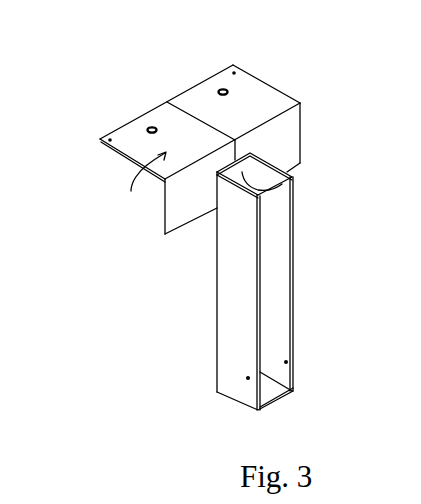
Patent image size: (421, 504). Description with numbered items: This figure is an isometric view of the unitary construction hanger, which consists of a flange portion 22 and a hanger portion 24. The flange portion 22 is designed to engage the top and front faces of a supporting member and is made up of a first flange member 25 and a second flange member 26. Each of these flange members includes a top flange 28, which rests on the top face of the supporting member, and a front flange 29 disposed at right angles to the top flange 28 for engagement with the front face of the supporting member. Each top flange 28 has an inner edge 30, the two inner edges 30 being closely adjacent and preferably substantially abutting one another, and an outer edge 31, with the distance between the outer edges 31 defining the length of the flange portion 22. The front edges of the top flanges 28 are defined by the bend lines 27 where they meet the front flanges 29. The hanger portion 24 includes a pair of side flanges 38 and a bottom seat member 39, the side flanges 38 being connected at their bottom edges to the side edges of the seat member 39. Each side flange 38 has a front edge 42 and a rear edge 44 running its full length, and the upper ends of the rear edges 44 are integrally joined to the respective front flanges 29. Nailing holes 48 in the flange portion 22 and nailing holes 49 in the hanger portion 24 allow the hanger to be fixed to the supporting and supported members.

The flange portion 22 is at (187, 157).
The hanger portion 24 is at (267, 288).
The first flange member 25 is at (143, 181).
The second flange member 26 is at (283, 94).
The bend line 27 is at (265, 128).
The top flange 28 is at (255, 92).
The front flange 29 is at (287, 153).
The inner edge 30 is at (160, 106).
The outer edge 31 is at (117, 158).
The side flange 38 is at (278, 318).
The bottom seat member 39 is at (270, 393).
The front edge 42 is at (290, 223).
The rear edge 44 is at (290, 182).
The nailing hole 48 is at (237, 71).
The nailing hole 49 is at (288, 362).